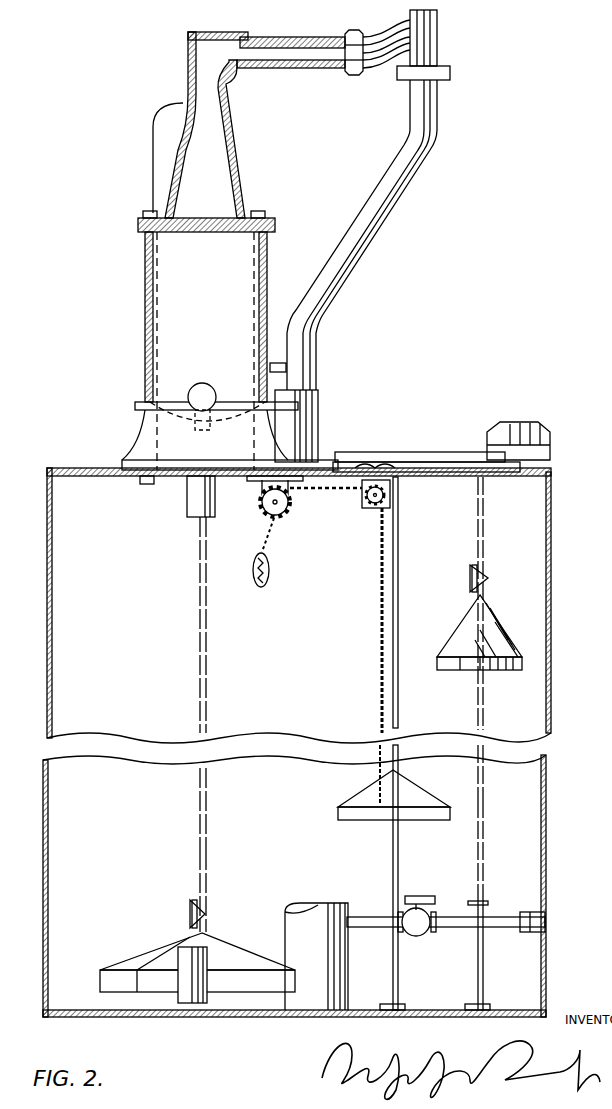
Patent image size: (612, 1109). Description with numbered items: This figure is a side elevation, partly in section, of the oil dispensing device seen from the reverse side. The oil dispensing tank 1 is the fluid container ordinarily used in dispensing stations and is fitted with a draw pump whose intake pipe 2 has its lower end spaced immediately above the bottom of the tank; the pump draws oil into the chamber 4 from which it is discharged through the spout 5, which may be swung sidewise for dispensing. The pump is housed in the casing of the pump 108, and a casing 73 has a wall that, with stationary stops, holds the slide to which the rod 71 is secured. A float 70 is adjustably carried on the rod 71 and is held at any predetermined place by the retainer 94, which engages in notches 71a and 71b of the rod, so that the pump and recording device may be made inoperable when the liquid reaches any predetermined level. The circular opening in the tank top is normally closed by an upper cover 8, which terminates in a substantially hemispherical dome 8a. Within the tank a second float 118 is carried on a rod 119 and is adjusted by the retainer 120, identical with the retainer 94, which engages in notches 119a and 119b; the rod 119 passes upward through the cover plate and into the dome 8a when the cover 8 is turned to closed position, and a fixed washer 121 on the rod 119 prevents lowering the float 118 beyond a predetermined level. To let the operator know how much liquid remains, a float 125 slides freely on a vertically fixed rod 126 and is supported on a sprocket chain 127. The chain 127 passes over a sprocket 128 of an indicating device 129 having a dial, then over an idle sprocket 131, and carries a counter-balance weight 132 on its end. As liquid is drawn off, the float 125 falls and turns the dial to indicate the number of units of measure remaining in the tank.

The oil dispensing tank 1 is at (47, 612).
The intake pipe 2 is at (195, 510).
The chamber 4 is at (165, 290).
The spout 5 is at (415, 192).
The upper cover 8 is at (447, 452).
The hemispherical dome 8a is at (520, 425).
The float 70 is at (240, 942).
The rod 71 is at (207, 665).
The notch 71a is at (202, 852).
The notch 71b is at (203, 806).
The casing 73 is at (157, 127).
The retainer 94 is at (190, 915).
The casing of the pump 108 is at (267, 256).
The float 118 is at (488, 632).
The rod 119 is at (480, 536).
The notch 119a is at (483, 778).
The notch 119b is at (483, 821).
The retainer 120 is at (472, 580).
The fixed washer 121 is at (488, 903).
The float 125 is at (378, 800).
The vertically fixed rod 126 is at (398, 713).
The sprocket chain 127 is at (382, 663).
The sprocket 128 is at (378, 510).
The indicating device 129 is at (375, 466).
The idle sprocket 131 is at (290, 506).
The counter-balance weight 132 is at (268, 574).